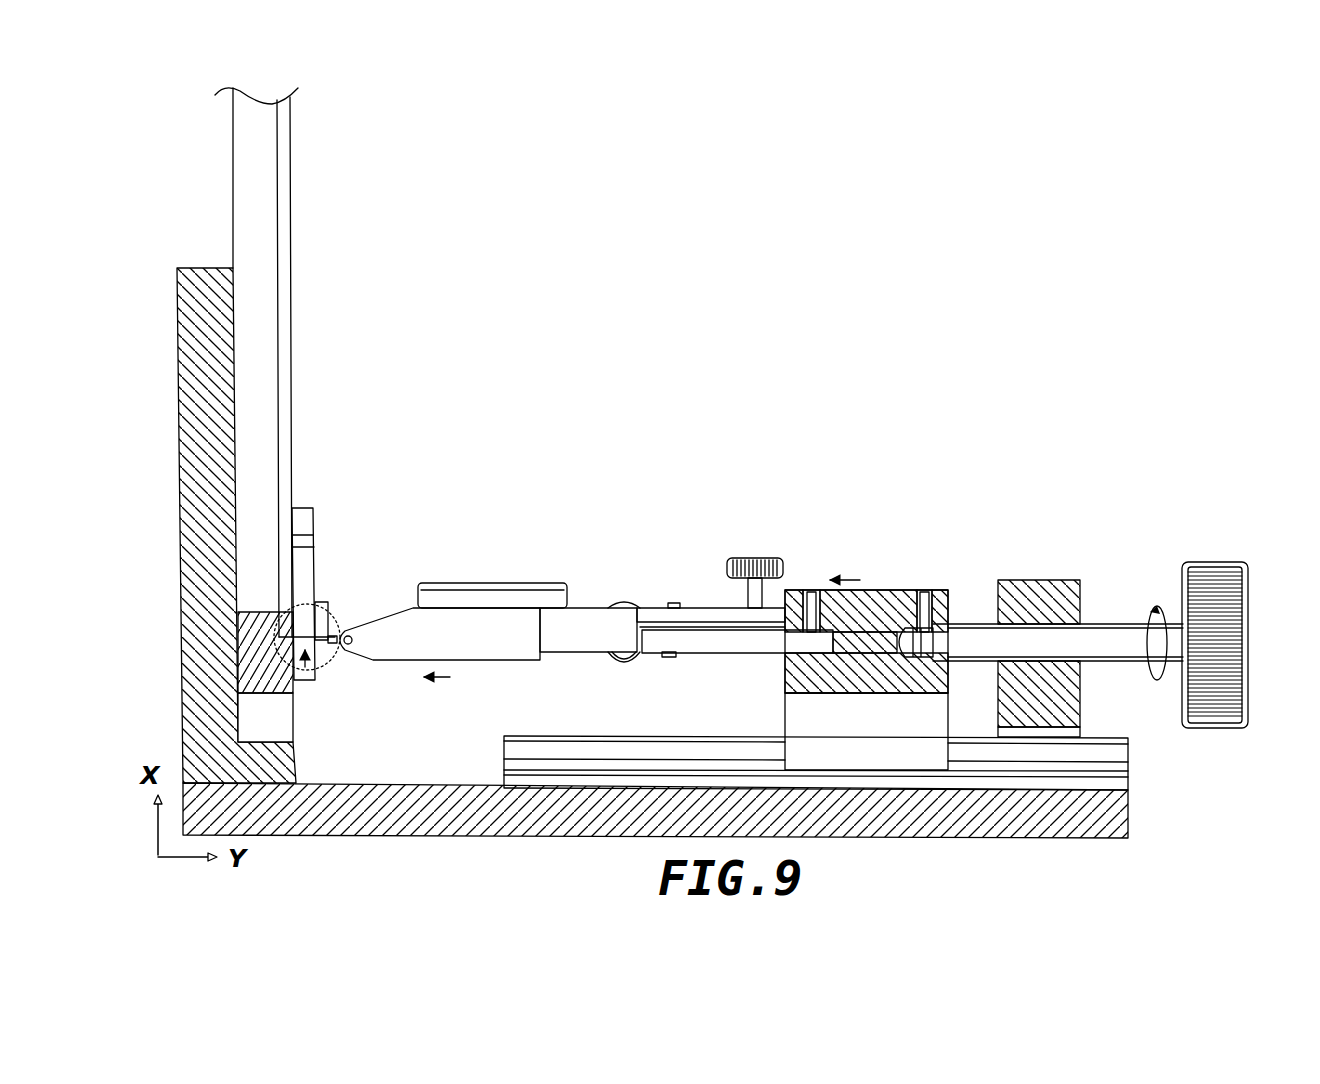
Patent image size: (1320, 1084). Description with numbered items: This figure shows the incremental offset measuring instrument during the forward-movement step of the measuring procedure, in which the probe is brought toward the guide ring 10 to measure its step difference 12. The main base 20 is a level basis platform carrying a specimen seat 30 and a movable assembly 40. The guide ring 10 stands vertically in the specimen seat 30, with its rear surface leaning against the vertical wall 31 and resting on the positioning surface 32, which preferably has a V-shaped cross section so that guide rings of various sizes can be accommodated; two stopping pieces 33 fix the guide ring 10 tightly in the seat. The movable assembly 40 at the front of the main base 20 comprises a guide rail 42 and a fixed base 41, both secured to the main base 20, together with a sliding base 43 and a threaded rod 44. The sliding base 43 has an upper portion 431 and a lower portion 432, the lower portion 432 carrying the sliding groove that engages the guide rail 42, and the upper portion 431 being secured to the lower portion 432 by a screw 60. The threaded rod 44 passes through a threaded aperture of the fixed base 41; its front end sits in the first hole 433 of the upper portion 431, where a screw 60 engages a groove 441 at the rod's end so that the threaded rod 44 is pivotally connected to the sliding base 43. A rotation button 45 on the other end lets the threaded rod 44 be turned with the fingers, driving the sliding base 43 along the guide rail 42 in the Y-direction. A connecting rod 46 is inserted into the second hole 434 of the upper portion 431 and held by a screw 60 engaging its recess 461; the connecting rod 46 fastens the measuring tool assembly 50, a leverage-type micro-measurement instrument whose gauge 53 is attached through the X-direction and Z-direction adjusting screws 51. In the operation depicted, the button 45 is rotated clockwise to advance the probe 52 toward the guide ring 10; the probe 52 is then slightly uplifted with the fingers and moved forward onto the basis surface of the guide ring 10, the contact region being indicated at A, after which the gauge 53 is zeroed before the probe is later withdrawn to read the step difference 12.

The guide ring 10 is at (301, 362).
The step difference 12 is at (289, 644).
The main base 20 is at (1100, 820).
The specimen seat 30 is at (200, 290).
The vertical wall 31 is at (237, 355).
The positioning surface 32 is at (272, 460).
The stopping pieces 33 is at (303, 522).
The movable assembly 40 is at (958, 566).
The fixed base 41 is at (1050, 580).
The guide rail 42 is at (1100, 752).
The sliding base 43 is at (829, 614).
The upper portion 431 is at (860, 590).
The lower portion 432 is at (807, 705).
The first hole 433 is at (898, 590).
The second hole 434 is at (822, 590).
The threaded rod 44 is at (1125, 635).
The groove 441 is at (960, 612).
The rotation button 45 is at (1215, 582).
The connecting rod 46 is at (748, 605).
The recess 461 is at (807, 636).
The measuring tool assembly 50 is at (586, 550).
The X-direction and Z-direction adjusting screws 51 is at (730, 566).
The probe 52 is at (325, 648).
The gauge 53 is at (520, 597).
The screw 60 is at (928, 594).
The enlarged region A is at (333, 607).